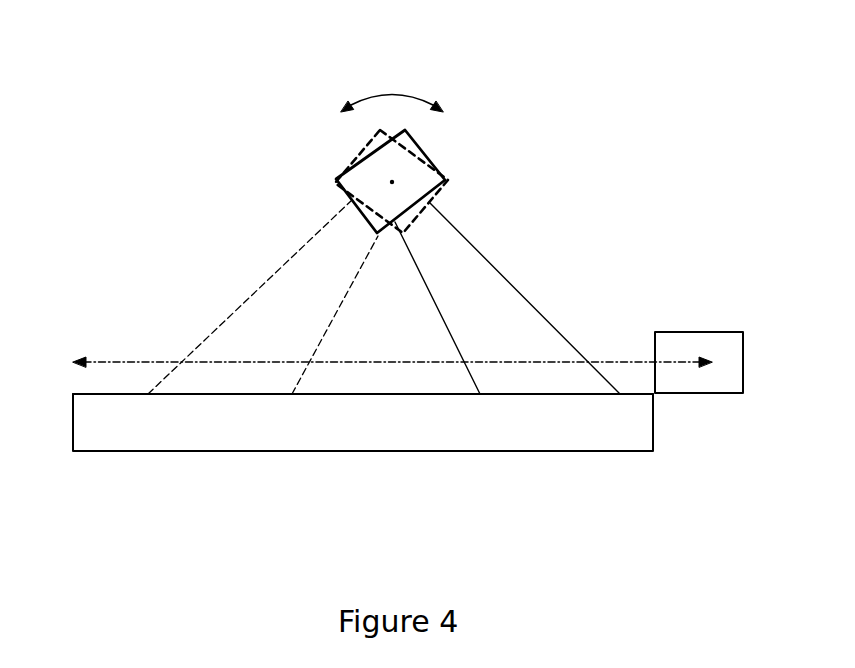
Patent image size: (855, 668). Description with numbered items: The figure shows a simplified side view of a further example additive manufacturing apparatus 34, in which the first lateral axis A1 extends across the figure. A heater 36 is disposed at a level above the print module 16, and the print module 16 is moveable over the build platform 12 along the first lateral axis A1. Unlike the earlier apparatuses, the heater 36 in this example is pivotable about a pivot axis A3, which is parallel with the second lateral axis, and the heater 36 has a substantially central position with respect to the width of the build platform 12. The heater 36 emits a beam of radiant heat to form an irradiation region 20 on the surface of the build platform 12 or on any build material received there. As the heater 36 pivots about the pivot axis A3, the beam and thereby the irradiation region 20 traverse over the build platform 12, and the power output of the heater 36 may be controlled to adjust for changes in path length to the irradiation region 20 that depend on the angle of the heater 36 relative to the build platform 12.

The additive manufacturing apparatus 34 is at (116, 58).
The heater 36 is at (417, 172).
The pivot axis A3 is at (392, 182).
The first lateral axis A1 is at (132, 362).
The print module 16 is at (703, 345).
The build platform 12 is at (255, 432).
The irradiation region 20 is at (557, 389).